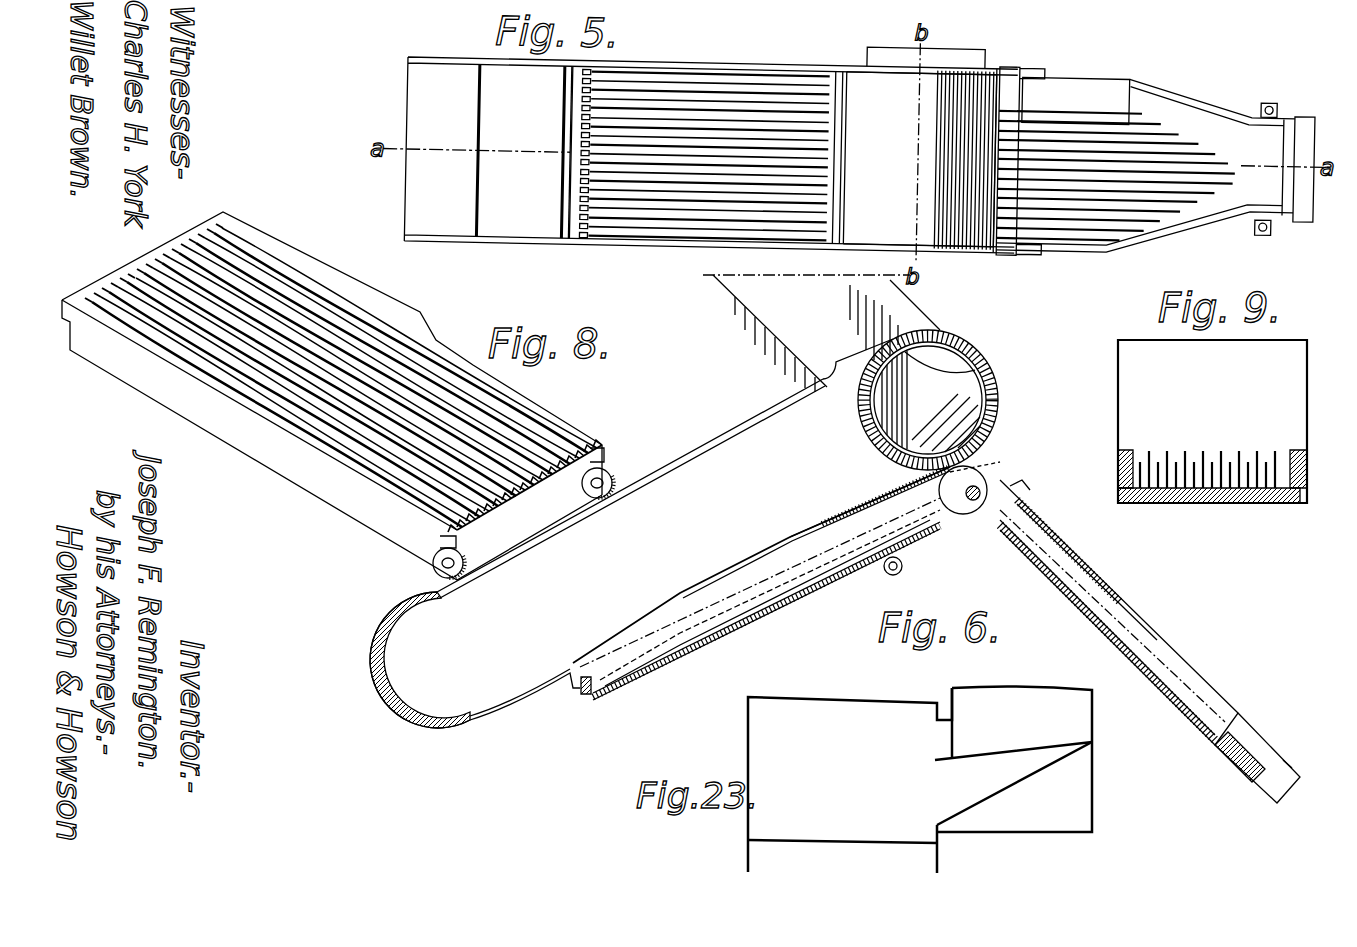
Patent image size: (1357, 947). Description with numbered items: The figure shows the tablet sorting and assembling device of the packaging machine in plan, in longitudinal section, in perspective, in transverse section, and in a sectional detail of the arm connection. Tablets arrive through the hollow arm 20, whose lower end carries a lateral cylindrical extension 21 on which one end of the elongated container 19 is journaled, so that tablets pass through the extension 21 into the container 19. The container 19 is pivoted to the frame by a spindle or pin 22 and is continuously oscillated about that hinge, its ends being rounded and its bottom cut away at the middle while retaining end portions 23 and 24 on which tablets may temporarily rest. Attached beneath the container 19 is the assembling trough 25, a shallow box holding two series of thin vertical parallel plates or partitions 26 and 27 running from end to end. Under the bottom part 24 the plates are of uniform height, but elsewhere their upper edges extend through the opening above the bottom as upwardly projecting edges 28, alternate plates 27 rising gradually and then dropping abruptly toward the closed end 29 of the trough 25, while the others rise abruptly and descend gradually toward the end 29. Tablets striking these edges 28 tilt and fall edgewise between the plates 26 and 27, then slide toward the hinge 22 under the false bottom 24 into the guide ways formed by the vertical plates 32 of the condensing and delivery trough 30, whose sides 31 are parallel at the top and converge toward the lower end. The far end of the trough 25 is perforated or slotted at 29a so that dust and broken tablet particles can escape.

In FIG. 5, the elongated container 19 is at (708, 173).
In FIG. 6, the elongated container 19 is at (768, 440).
In FIG. 9, the elongated container 19 is at (1230, 421).
In FIG. 23, the elongated container 19 is at (748, 737).
In FIG. 6, the hollow arm 20 is at (760, 312).
In FIG. 23, the hollow arm 20 is at (1092, 712).
In FIG. 5, the lateral cylindrical extension 21 is at (929, 133).
In FIG. 6, the lateral cylindrical extension 21 is at (928, 400).
In FIG. 23, the lateral cylindrical extension 21 is at (943, 750).
In FIG. 6, the spindle or pin 22 is at (973, 502).
In FIG. 5, the bottom portion 23 is at (529, 238).
In FIG. 6, the bottom portion 23 is at (537, 687).
In FIG. 5, the bottom portion 24 is at (840, 80).
In FIG. 6, the bottom portion 24 is at (852, 517).
In FIG. 23, the bottom portion 24 is at (833, 843).
In FIG. 8, the assembling trough 25 is at (270, 440).
In FIG. 6, the assembling trough 25 is at (806, 592).
In FIG. 9, the assembling trough 25 is at (1307, 500).
In FIG. 5, the parallel plates or partitions 26 is at (717, 112).
In FIG. 8, the parallel plates or partitions 26 is at (568, 444).
In FIG. 9, the parallel plates or partitions 26 is at (1158, 462).
In FIG. 5, the parallel plates or partitions 27 is at (803, 122).
In FIG. 8, the parallel plates or partitions 27 is at (518, 436).
In FIG. 6, the parallel plates or partitions 27 is at (735, 598).
In FIG. 9, the parallel plates or partitions 27 is at (1221, 451).
In FIG. 8, the upwardly projecting edges 28 is at (270, 272).
In FIG. 6, the upwardly projecting edges 28 is at (637, 617).
In FIG. 8, the closed end of trough 29 is at (150, 256).
In FIG. 6, the perforations or slots 29a is at (587, 693).
In FIG. 6, the condensing and delivery trough 30 is at (1116, 645).
In FIG. 5, the sides 31 is at (1097, 252).
In FIG. 6, the sides 31 is at (1265, 755).
In FIG. 5, the vertical plates 32 is at (1193, 121).
In FIG. 6, the vertical plates 32 is at (1098, 588).